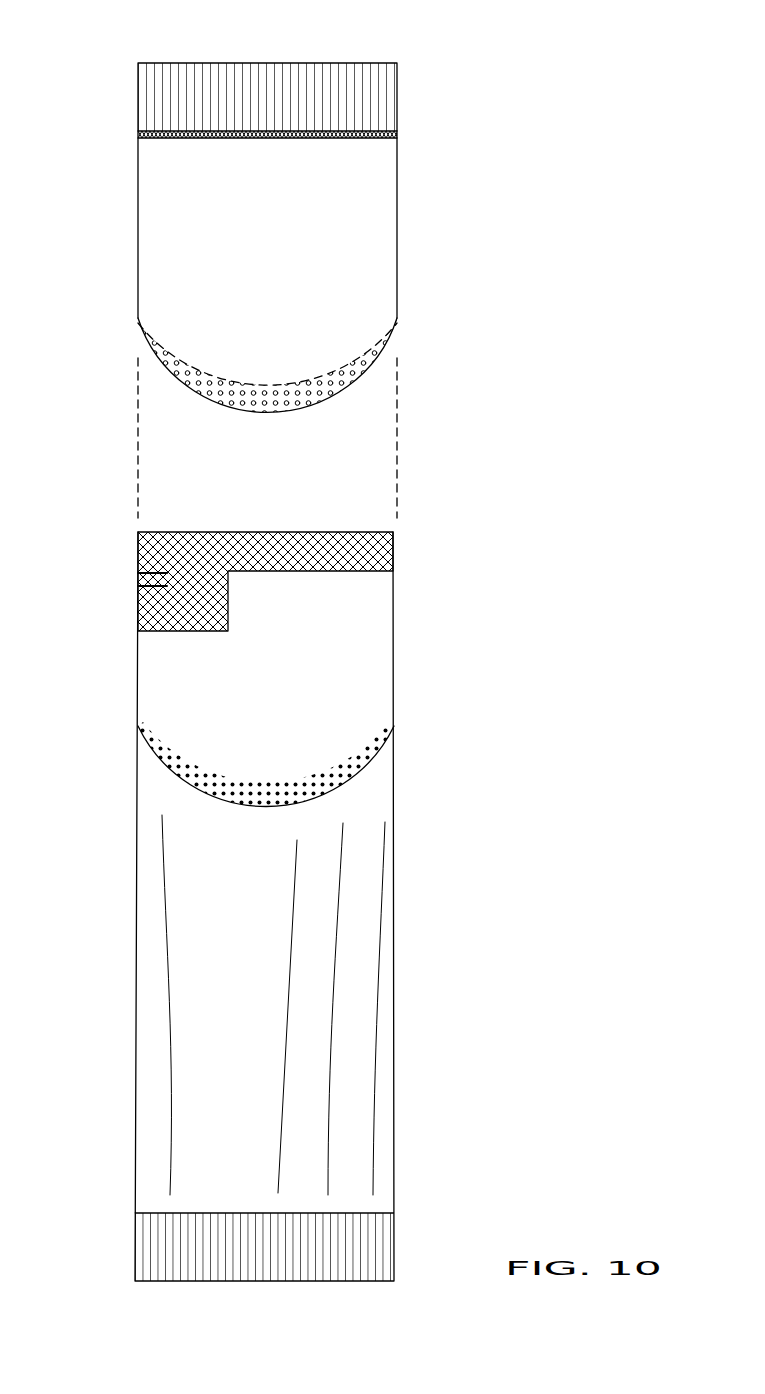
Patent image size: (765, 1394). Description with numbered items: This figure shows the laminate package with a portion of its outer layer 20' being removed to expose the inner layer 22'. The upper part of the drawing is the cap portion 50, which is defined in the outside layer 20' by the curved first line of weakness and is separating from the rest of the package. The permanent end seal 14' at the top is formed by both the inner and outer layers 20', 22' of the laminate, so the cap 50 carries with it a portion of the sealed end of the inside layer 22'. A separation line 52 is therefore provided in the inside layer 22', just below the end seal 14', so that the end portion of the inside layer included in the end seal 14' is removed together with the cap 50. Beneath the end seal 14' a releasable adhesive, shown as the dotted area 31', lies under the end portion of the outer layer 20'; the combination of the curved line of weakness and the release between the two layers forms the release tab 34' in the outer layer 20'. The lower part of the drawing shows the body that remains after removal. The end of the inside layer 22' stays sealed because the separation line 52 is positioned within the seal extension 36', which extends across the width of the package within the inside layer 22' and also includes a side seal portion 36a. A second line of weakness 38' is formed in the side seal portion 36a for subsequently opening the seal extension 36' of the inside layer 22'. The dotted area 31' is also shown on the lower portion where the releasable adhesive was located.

The end seal 14′ is at (337, 92).
The separation line 52 is at (207, 140).
The cap portion 50 is at (138, 266).
The outer layer 20′ is at (327, 220).
The release tab 34′ is at (202, 390).
The releasable adhesive area 31′ is at (380, 368).
The seal extension 36′ is at (368, 550).
The second line of weakness 38′ is at (150, 586).
The side seal portion 36a is at (162, 611).
The inner layer 22′ is at (330, 645).